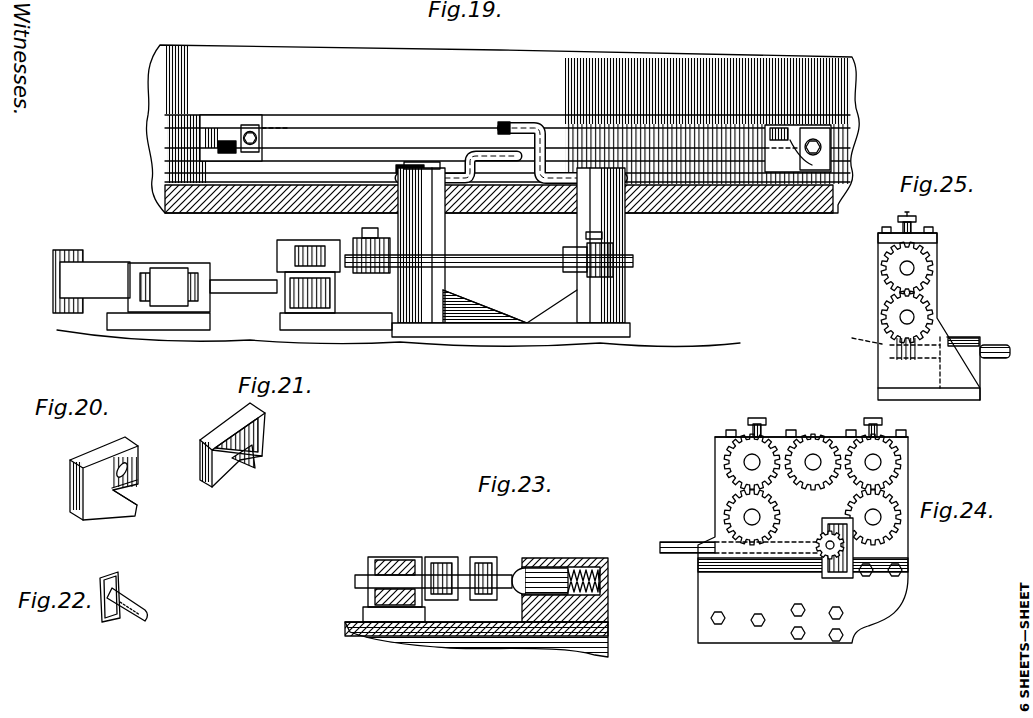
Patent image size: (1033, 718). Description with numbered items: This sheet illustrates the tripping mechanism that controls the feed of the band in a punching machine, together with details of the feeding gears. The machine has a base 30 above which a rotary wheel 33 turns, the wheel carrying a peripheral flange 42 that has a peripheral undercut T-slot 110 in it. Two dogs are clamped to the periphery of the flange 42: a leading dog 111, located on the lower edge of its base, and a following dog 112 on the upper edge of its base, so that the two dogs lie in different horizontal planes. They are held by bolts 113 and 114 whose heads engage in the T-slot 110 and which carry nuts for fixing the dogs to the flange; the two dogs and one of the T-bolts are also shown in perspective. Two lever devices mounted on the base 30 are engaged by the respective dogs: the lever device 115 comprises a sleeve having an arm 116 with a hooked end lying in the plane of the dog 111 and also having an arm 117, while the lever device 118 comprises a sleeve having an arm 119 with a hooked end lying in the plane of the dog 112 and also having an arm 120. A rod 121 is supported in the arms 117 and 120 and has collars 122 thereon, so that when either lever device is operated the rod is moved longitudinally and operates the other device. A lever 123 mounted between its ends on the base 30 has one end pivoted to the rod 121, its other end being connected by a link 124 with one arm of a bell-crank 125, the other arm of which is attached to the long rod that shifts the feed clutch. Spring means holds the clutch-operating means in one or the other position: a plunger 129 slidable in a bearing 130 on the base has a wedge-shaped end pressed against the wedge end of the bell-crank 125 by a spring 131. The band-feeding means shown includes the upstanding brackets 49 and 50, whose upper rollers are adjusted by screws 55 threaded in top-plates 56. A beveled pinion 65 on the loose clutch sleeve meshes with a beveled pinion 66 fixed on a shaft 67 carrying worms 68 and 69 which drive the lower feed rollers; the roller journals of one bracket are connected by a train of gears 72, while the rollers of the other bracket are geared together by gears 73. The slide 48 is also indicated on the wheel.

In FIG. 19, the base 30 is at (500, 352).
In FIG. 23, the base 30 is at (505, 640).
In FIG. 19, the rotary wheel 33 is at (530, 62).
In FIG. 19, the peripheral flange 42 is at (168, 120).
In FIG. 19, the slide bar 48 is at (165, 200).
In FIG. 24, the supporting bracket 49 is at (888, 605).
In FIG. 25, the supporting bracket 50 is at (885, 372).
In FIG. 24, the screws 55 is at (768, 414).
In FIG. 25, the screws 55 is at (918, 222).
In FIG. 24, the top-plates 56 is at (715, 440).
In FIG. 25, the top-plates 56 is at (938, 238).
In FIG. 24, the beveled pinion 65 is at (822, 566).
In FIG. 24, the beveled pinion 66 is at (845, 578).
In FIG. 24, the shaft 67 is at (688, 532).
In FIG. 25, the shaft 67 is at (997, 346).
In FIG. 24, the worm 68 is at (700, 565).
In FIG. 25, the worm 69 is at (845, 336).
In FIG. 24, the train of gears 72 is at (845, 488).
In FIG. 25, the gears 73 is at (886, 305).
In FIG. 19, the peripheral undercut T-slot 110 is at (378, 128).
In FIG. 19, the leading dog 111 is at (220, 140).
In FIG. 20, the leading dog 111 is at (140, 514).
In FIG. 19, the following dog 112 is at (822, 178).
In FIG. 21, the following dog 112 is at (250, 458).
In FIG. 19, the bolt 113 is at (278, 125).
In FIG. 22, the bolt 113 is at (128, 593).
In FIG. 19, the bolt 114 is at (822, 150).
In FIG. 19, the lever device 115 is at (446, 232).
In FIG. 19, the arm 116 is at (492, 150).
In FIG. 19, the arm 117 is at (375, 290).
In FIG. 19, the lever device 118 is at (626, 250).
In FIG. 19, the arm 119 is at (512, 125).
In FIG. 19, the arm 120 is at (567, 274).
In FIG. 19, the rod 121 is at (492, 266).
In FIG. 19, the collars 122 is at (628, 288).
In FIG. 19, the lever 123 is at (284, 255).
In FIG. 19, the link 124 is at (243, 292).
In FIG. 19, the bell-crank 125 is at (108, 278).
In FIG. 23, the bell-crank 125 is at (368, 586).
In FIG. 23, the plunger 129 is at (552, 572).
In FIG. 23, the bearing 130 is at (585, 560).
In FIG. 23, the spring 131 is at (603, 577).